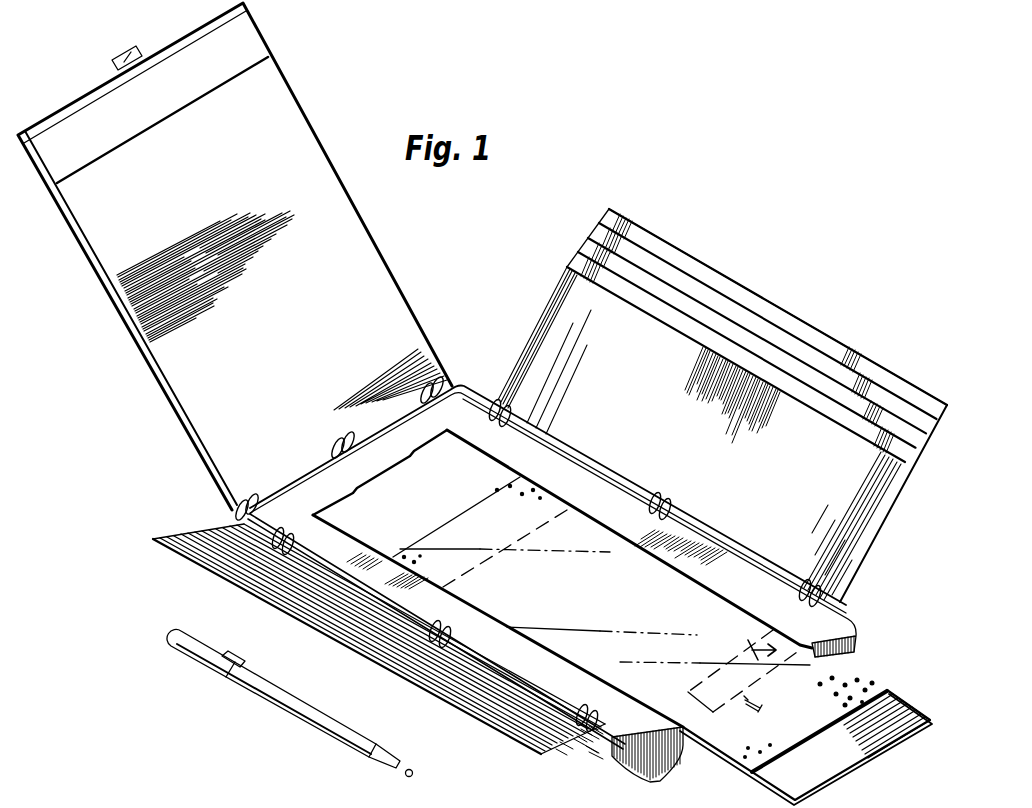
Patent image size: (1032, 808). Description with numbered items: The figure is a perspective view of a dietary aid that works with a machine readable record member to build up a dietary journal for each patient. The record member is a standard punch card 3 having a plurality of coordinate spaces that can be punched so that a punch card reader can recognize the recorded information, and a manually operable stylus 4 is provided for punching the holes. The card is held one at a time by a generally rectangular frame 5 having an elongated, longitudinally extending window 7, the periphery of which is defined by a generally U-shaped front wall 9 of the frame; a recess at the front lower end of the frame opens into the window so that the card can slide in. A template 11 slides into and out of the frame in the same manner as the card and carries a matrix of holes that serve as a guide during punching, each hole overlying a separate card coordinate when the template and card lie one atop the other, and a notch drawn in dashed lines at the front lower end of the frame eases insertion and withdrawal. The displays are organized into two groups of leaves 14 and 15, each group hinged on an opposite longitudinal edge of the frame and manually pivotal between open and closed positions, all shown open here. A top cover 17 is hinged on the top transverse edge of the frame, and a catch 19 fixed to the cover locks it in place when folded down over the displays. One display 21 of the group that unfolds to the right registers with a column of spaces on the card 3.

The punch card 3 is at (897, 708).
The stylus 4 is at (335, 719).
The frame 5 is at (623, 789).
The window 7 is at (435, 483).
The front wall 9 is at (378, 474).
The template 11 is at (887, 692).
The group of leaves 14 is at (144, 530).
The group of leaves 15 is at (580, 241).
The top cover 17 is at (292, 362).
The catch 19 is at (139, 50).
The display 21 is at (767, 310).